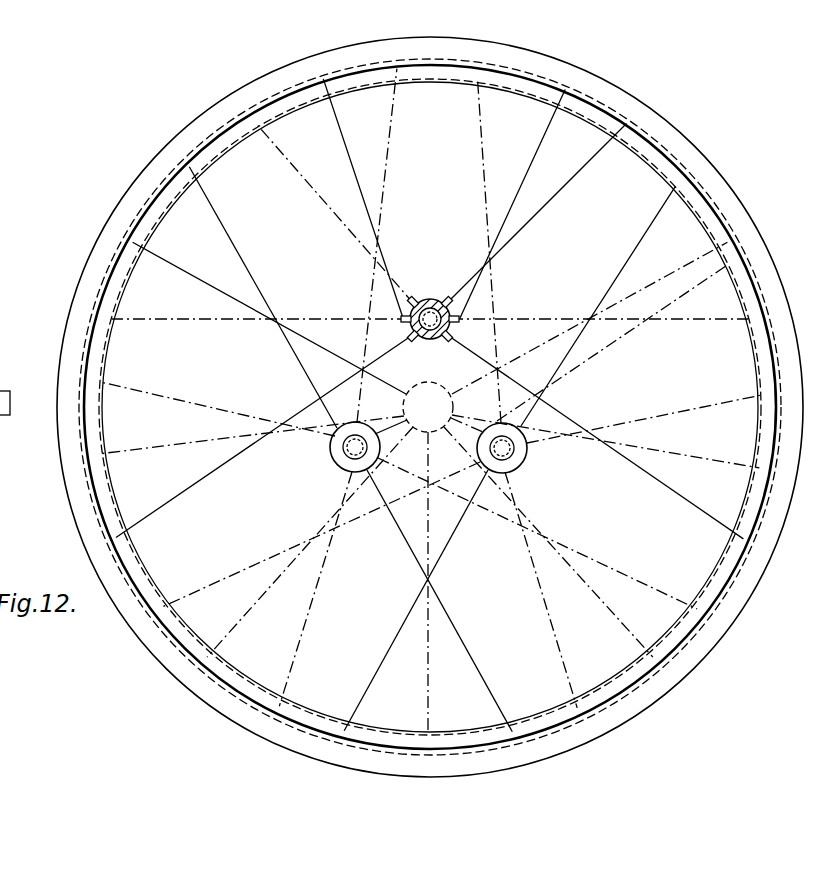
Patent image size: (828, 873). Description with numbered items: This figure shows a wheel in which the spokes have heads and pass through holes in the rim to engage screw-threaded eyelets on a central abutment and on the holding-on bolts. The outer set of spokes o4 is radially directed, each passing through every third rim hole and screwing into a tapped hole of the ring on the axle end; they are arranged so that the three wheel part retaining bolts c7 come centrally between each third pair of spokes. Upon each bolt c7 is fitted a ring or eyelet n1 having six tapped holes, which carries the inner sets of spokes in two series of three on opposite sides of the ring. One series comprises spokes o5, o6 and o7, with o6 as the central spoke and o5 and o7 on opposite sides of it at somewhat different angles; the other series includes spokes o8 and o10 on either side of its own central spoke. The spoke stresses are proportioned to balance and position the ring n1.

The spoke o4 is at (447, 783).
The spoke o5 is at (407, 350).
The central spoke o6 is at (402, 343).
The spoke o7 is at (384, 268).
The spoke o8 is at (476, 278).
The spoke o10 is at (460, 331).
The ring or eyelet n1 is at (366, 438).
The wheel part retaining bolt c7 is at (346, 452).